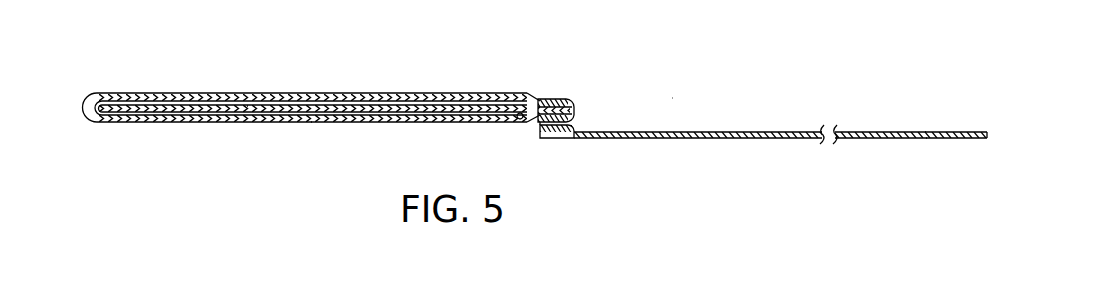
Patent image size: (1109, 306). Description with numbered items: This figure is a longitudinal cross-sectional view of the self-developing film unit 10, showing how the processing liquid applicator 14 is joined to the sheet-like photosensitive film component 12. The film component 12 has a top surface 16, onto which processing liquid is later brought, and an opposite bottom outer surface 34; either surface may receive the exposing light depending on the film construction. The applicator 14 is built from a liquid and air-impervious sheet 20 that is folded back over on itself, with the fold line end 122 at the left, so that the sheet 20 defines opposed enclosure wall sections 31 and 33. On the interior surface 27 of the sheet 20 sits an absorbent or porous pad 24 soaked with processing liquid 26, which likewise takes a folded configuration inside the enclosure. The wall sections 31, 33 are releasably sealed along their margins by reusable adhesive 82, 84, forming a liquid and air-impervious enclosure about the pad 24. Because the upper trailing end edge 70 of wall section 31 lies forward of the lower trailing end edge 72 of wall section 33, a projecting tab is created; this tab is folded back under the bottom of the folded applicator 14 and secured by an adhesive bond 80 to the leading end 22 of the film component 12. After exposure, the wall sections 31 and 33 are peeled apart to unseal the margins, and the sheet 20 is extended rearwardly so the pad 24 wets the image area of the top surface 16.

The self-developing film unit 10 is at (672, 98).
The photosensitive film component 12 is at (703, 140).
The processing liquid applicator 14 is at (118, 84).
The top surface 16 is at (925, 132).
The liquid and air-impervious sheet 20 is at (363, 97).
The leading end 22 is at (572, 137).
The absorbent pad 24 is at (177, 99).
The processing liquid 26 is at (249, 114).
The interior surface 27 is at (528, 97).
The upper enclosure wall section 31 is at (247, 108).
The lower enclosure wall section 33 is at (311, 123).
The bottom outer surface 34 is at (926, 139).
The upper trailing end edge 70 is at (572, 100).
The lower trailing end edge 72 is at (536, 124).
The adhesive bond 80 is at (575, 129).
The reusable adhesive 82 is at (569, 104).
The reusable adhesive 84 is at (573, 111).
The fold line end 122 is at (82, 107).